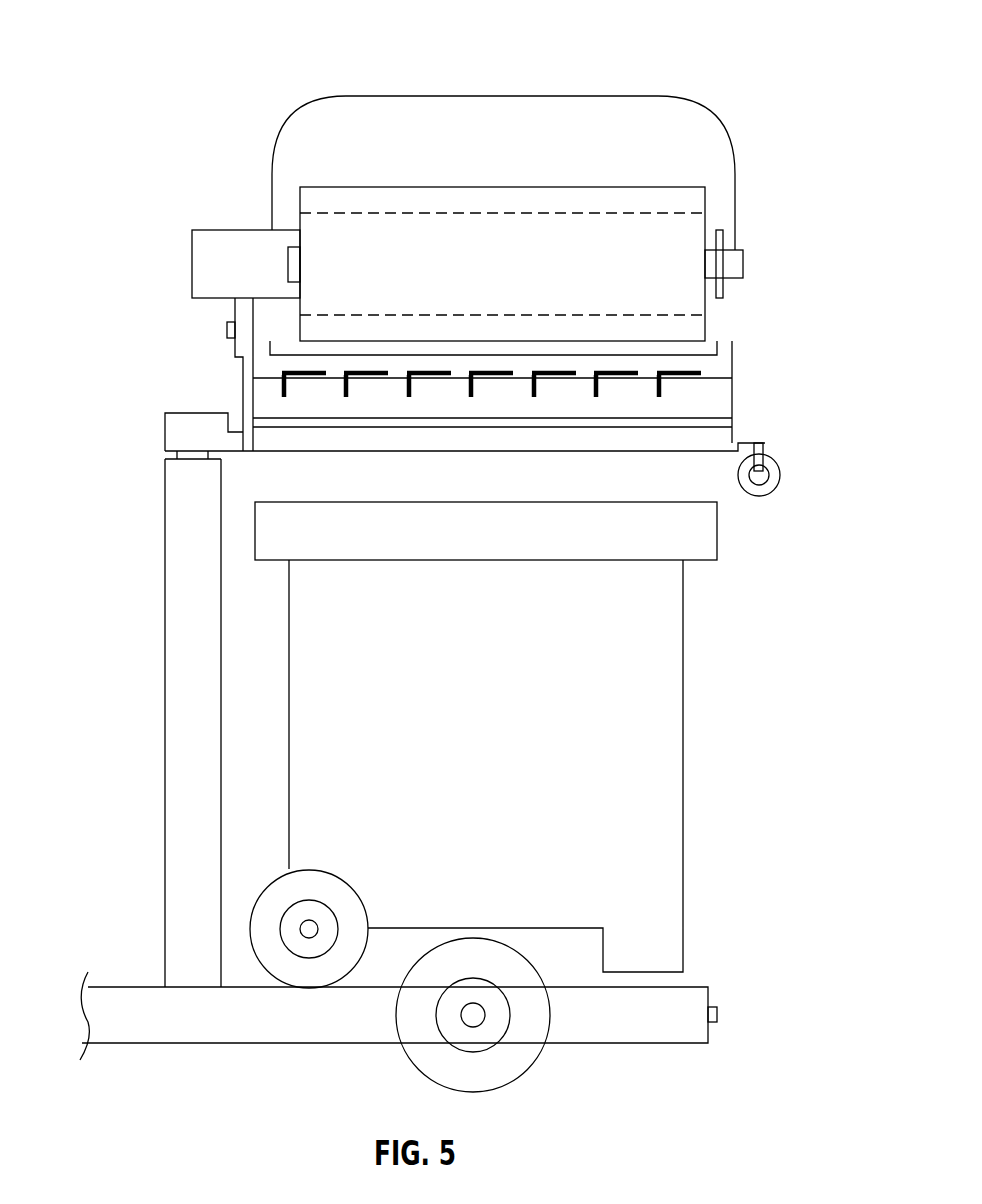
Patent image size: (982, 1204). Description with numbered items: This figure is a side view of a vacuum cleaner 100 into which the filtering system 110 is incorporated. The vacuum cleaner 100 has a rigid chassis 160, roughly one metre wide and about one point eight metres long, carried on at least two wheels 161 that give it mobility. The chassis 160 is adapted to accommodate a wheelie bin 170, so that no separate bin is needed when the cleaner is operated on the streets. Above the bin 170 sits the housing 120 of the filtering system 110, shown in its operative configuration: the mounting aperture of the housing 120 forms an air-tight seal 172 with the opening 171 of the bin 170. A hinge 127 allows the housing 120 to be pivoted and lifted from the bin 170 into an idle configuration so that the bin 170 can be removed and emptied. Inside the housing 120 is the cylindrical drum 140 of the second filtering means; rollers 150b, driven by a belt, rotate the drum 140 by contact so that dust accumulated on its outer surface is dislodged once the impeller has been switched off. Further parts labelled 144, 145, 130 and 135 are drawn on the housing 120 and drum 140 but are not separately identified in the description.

The vacuum cleaner 100 is at (704, 66).
The filtering system 110 is at (274, 114).
The housing 120 is at (716, 117).
The drum 140 is at (530, 180).
The motor 144 is at (300, 204).
The bearing support 145 is at (706, 305).
The rollers 150b is at (270, 350).
The brackets 135 is at (281, 396).
The tray 130 is at (296, 408).
The seal 172 is at (720, 440).
The hinge 127 is at (225, 419).
The opening 171 is at (580, 501).
The wheelie bin 170 is at (690, 810).
The chassis 160 is at (158, 688).
The wheels 161 is at (430, 1088).